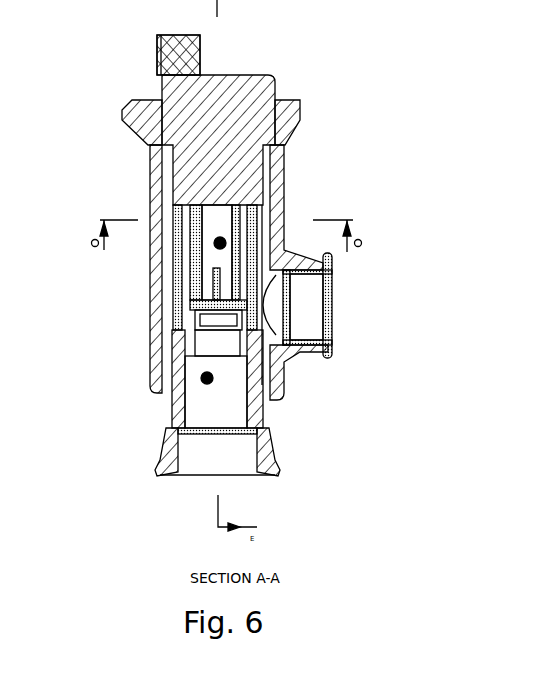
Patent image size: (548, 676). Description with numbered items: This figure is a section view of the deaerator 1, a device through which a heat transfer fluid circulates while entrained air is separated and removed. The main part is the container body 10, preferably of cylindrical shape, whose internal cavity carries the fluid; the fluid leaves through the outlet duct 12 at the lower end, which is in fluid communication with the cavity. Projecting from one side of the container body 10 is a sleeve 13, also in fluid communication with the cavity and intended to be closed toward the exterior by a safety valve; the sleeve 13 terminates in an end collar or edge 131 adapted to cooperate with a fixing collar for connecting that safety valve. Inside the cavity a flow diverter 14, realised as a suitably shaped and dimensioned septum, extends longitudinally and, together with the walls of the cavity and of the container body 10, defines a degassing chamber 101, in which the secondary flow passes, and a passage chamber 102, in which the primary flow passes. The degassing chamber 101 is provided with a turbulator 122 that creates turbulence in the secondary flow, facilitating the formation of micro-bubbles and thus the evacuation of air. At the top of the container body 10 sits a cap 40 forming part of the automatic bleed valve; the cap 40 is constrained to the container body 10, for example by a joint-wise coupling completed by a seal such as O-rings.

The deaerator 1 is at (112, 98).
The container body 10 is at (300, 117).
The degassing chamber 101 is at (235, 237).
The passage chamber 102 is at (200, 383).
The outlet duct 12 is at (272, 462).
The turbulator 122 is at (160, 280).
The sleeve 13 is at (330, 268).
The end collar 131 is at (332, 357).
The flow diverter 14 is at (208, 342).
The cap 40 is at (233, 77).